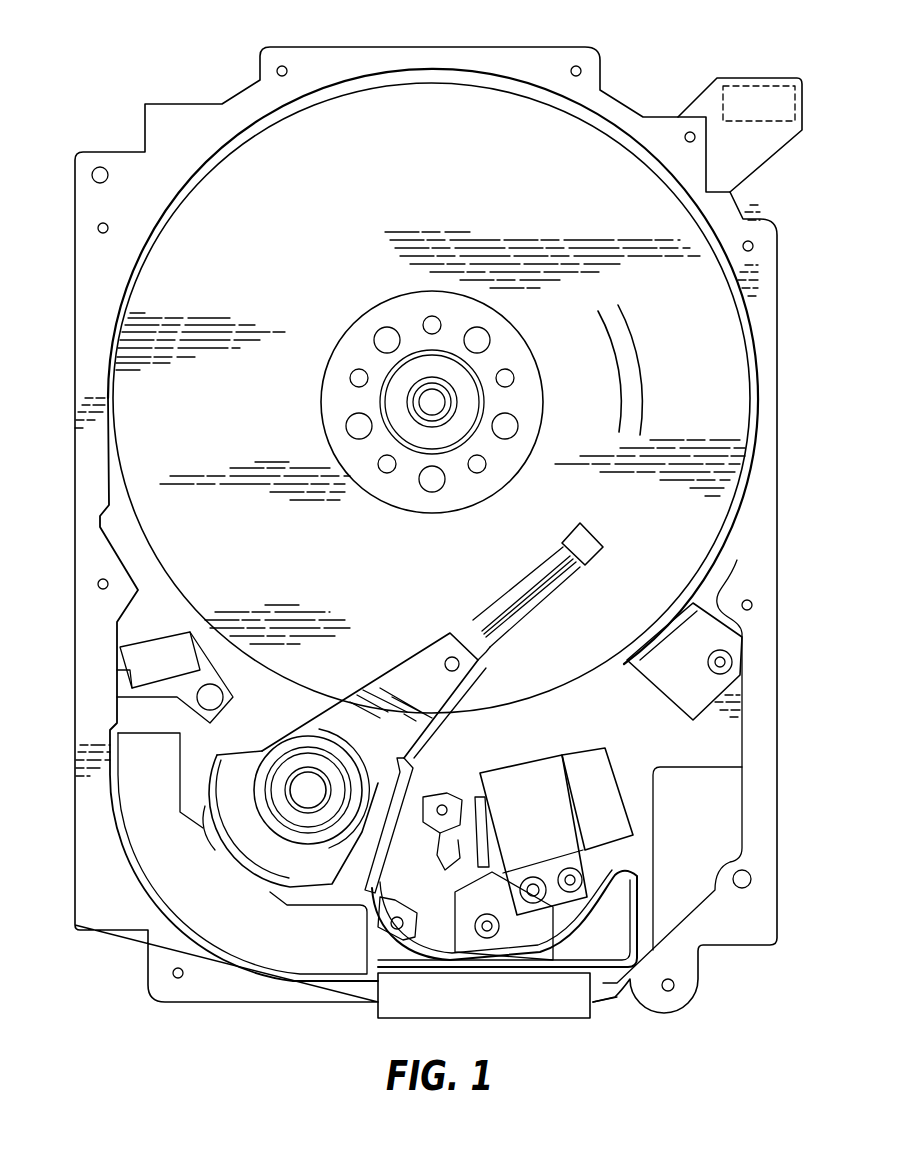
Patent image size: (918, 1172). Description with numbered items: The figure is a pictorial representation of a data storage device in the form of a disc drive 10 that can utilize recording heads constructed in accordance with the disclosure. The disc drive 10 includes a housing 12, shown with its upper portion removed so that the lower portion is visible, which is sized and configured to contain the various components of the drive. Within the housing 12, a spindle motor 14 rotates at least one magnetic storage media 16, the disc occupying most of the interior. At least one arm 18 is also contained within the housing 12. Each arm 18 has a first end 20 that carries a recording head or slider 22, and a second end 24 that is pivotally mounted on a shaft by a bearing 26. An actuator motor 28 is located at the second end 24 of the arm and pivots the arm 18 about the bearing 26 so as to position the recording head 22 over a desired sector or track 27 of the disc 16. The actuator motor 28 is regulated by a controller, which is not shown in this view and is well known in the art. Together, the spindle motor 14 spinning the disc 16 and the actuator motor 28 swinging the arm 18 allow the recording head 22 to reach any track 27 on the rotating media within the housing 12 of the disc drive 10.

The disc drive 10 is at (126, 86).
The housing 12 is at (556, 47).
The spindle motor 14 is at (428, 404).
The magnetic storage media 16 is at (351, 206).
The arm 18 is at (418, 678).
The first end 20 is at (532, 572).
The recording head 22 is at (587, 528).
The second end 24 is at (333, 733).
The bearing 26 is at (300, 780).
The track 27 is at (627, 378).
The actuator motor 28 is at (211, 903).